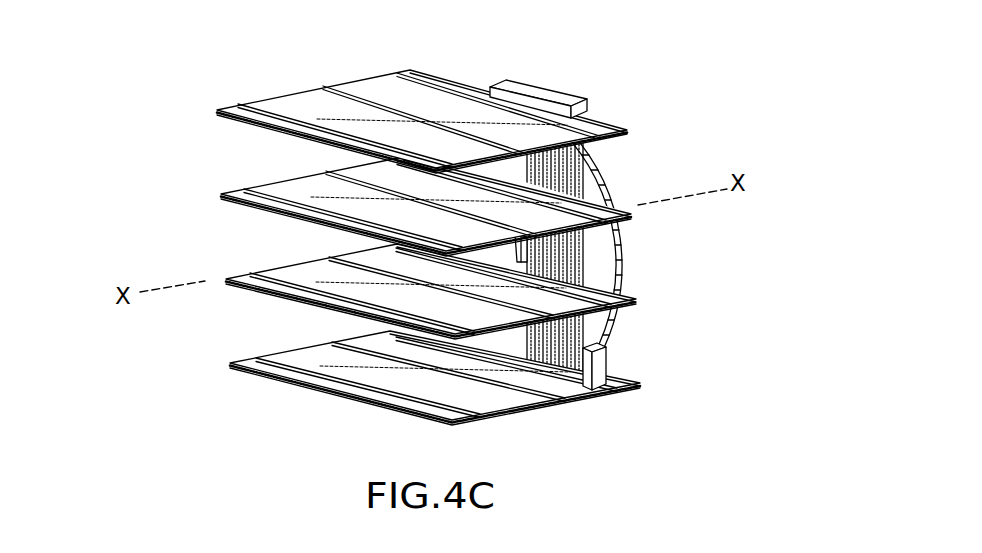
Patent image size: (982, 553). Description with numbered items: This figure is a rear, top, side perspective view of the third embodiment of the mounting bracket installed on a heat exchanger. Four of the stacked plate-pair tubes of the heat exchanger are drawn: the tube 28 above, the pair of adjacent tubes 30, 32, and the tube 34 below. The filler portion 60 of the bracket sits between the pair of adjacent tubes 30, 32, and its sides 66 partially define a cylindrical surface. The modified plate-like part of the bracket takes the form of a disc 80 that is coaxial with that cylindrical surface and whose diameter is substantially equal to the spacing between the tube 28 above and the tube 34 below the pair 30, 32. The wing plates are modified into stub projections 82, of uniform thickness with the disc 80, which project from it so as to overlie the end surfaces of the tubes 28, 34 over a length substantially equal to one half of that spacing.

The tube 28 is at (233, 90).
The tube 30 is at (230, 177).
The tube 32 is at (240, 266).
The tube 34 is at (237, 350).
The filler portion 60 is at (523, 259).
The sides of the filler portion 66 is at (573, 260).
The disc 80 is at (617, 247).
The stub projections 82 is at (565, 100).